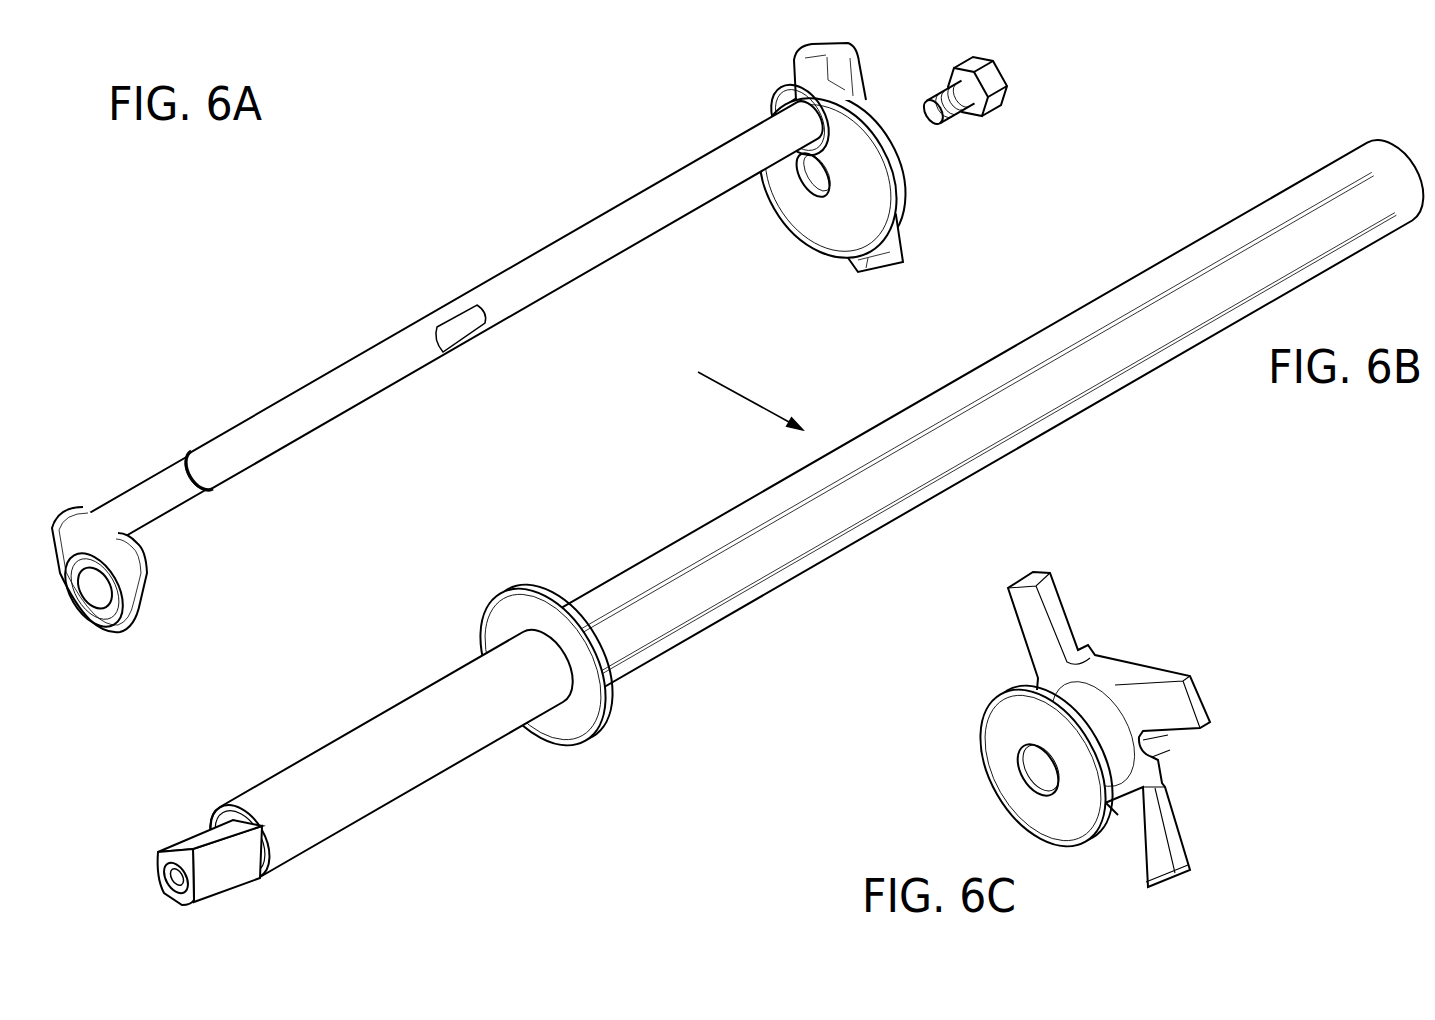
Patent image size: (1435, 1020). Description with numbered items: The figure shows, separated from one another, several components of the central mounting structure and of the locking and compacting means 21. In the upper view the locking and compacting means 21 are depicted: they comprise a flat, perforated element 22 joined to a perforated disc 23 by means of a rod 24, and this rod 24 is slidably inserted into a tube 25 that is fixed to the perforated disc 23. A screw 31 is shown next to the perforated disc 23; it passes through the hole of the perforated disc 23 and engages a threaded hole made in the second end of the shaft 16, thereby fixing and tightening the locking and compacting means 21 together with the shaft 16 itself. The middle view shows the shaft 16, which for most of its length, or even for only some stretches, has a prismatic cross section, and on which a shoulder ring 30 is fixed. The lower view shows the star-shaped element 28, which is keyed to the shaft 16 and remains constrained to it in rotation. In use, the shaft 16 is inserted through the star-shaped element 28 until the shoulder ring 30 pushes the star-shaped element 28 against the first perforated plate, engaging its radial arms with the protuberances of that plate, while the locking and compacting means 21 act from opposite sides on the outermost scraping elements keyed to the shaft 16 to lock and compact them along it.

In FIG. 6B, the shaft 16 is at (680, 577).
In FIG. 6A, the locking and compacting means 21 is at (420, 259).
In FIG. 6A, the flat, perforated element 22 is at (140, 587).
In FIG. 6A, the perforated disc 23 is at (853, 193).
In FIG. 6A, the rod 24 is at (150, 492).
In FIG. 6A, the tube 25 is at (667, 192).
In FIG. 6C, the star-shaped element 28 is at (1040, 620).
In FIG. 6B, the shoulder ring 30 is at (550, 740).
In FIG. 6C, the shoulder ring 30 is at (992, 723).
In FIG. 6A, the screw 31 is at (1005, 78).